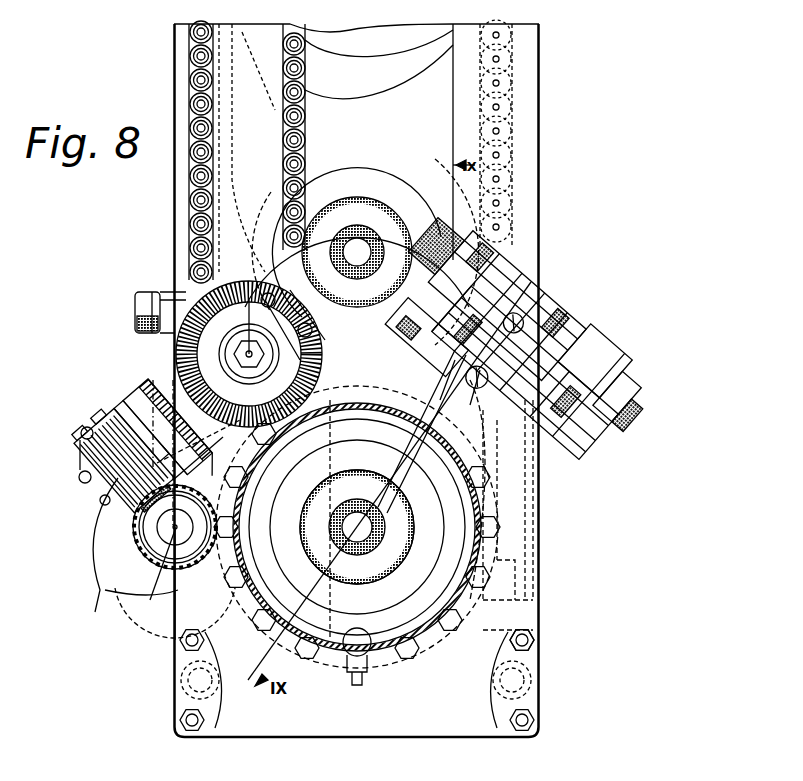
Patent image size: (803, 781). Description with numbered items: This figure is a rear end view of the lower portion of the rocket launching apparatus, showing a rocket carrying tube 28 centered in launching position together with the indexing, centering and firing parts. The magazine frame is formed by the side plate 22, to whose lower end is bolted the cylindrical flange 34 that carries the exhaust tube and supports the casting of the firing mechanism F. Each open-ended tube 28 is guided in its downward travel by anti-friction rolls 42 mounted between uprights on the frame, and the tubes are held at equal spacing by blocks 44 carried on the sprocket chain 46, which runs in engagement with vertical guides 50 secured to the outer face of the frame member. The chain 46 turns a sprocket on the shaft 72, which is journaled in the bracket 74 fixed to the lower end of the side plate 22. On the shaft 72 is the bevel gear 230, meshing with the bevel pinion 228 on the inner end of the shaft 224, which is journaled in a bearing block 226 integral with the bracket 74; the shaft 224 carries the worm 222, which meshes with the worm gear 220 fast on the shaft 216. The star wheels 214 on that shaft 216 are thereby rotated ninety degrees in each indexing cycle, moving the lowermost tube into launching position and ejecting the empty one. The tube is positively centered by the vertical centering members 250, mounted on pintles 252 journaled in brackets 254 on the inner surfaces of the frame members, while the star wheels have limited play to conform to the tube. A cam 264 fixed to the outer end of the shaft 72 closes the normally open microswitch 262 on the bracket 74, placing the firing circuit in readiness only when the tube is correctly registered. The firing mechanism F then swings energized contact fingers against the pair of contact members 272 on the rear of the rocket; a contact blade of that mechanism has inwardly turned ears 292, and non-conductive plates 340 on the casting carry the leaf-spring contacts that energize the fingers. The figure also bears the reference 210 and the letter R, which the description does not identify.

The side plate 22 is at (300, 727).
The rocket carrying tube 28 is at (426, 126).
The cylindrical flange 34 is at (340, 650).
The anti-friction rolls 42 is at (232, 77).
The blocks 44 is at (305, 115).
The sprocket chain 46 is at (305, 190).
The vertical guides 50 is at (238, 40).
The sprocket shaft 72 is at (249, 340).
The bracket 74 is at (177, 285).
The rod 210 is at (478, 410).
The star wheels 214 is at (92, 607).
The shaft 216 is at (150, 573).
The worm gear 220 is at (133, 530).
The worm 222 is at (82, 458).
The shaft 224 is at (100, 495).
The bearing block 226 is at (130, 394).
The bevel pinion 228 is at (172, 378).
The bevel gear 230 is at (178, 341).
The centering members 250 is at (460, 640).
The pintles 252 is at (525, 548).
The brackets 254 is at (540, 633).
The microswitch 262 is at (330, 248).
The cam 264 is at (298, 298).
The contact members 272 is at (362, 560).
The inwardly turned ears 292 is at (380, 470).
The plates 340 is at (410, 345).
The rotation direction R is at (275, 640).
The firing mechanism F is at (580, 250).